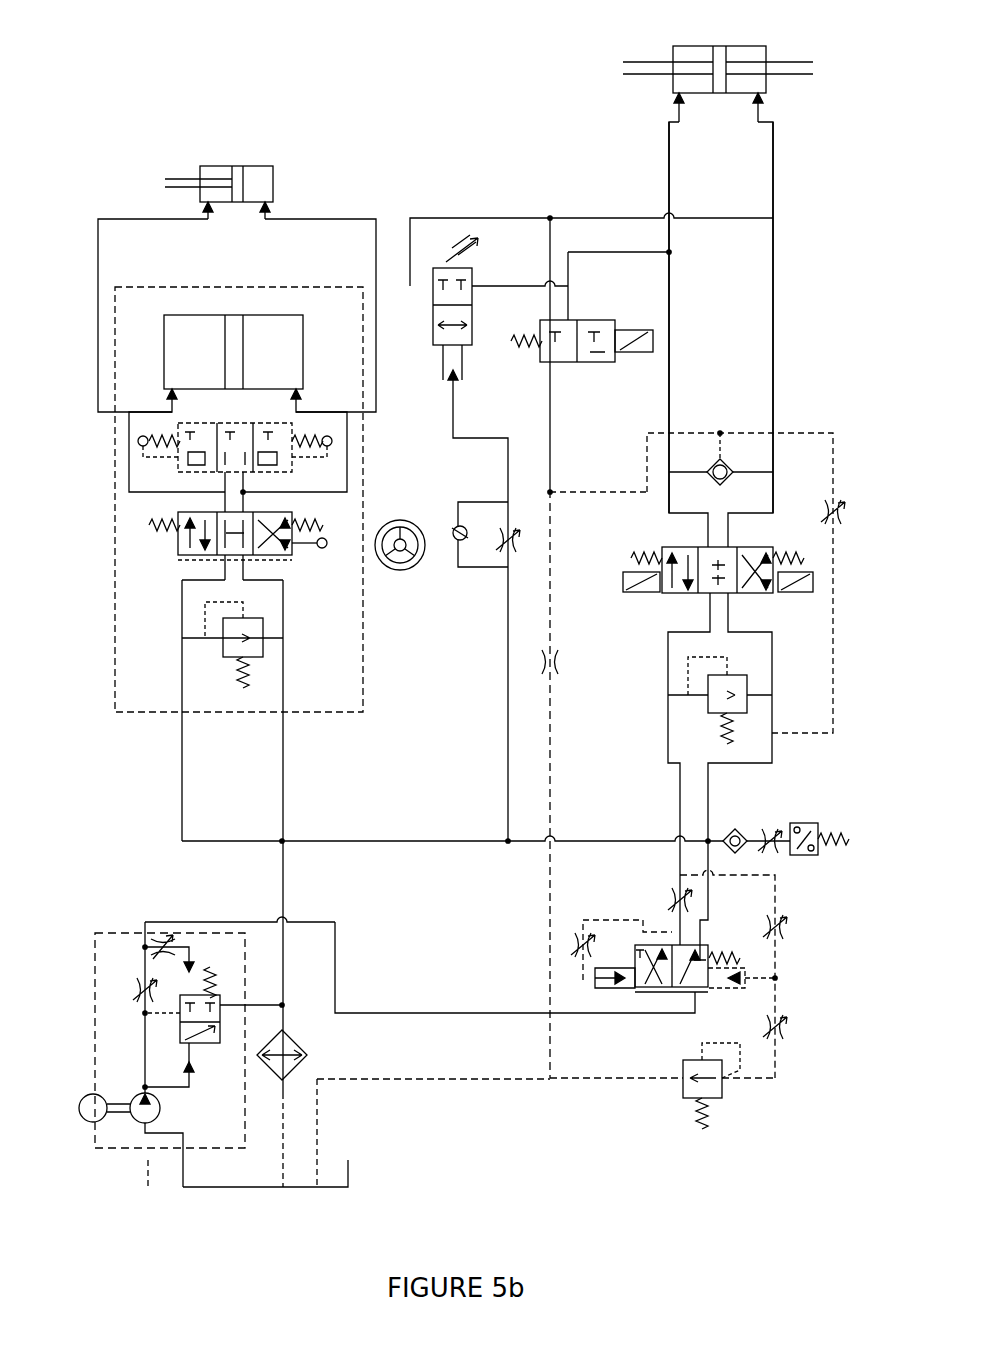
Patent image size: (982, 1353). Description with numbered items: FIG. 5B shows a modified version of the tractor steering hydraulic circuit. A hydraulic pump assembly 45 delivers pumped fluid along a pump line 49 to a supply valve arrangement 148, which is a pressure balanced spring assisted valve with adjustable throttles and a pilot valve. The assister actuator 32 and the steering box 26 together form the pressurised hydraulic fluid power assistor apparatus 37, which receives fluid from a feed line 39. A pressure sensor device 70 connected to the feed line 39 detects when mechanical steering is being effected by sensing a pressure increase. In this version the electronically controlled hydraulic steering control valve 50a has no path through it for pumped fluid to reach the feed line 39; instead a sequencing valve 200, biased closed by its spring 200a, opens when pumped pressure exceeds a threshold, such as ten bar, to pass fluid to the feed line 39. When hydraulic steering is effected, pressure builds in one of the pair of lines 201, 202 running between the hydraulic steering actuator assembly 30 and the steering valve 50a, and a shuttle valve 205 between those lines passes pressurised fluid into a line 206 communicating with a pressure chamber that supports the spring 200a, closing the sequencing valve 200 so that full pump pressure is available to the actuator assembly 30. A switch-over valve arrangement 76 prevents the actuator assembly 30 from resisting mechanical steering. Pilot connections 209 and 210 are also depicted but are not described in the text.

The hydraulic steering actuator assembly 30 is at (735, 37).
The assister actuator 32 is at (283, 161).
The steering box 26 is at (364, 467).
The power assistor apparatus 37 is at (363, 627).
The switch-over valve arrangement 76 is at (498, 333).
The line 201 is at (669, 378).
The line 202 is at (773, 253).
The shuttle valve 205 is at (730, 464).
The line 206 is at (818, 433).
The pilot line 209 is at (583, 492).
The pilot line 210 is at (568, 610).
The electronically controlled hydraulic steering control valve 50a is at (760, 606).
The sequencing valve 200 is at (704, 705).
The spring 200a is at (742, 737).
The pressure sensor device 70 is at (807, 823).
The supply valve arrangement 148 is at (632, 913).
The hydraulic pump assembly 45 is at (118, 919).
The feed line 39 is at (405, 843).
The pump line 49 is at (418, 1013).